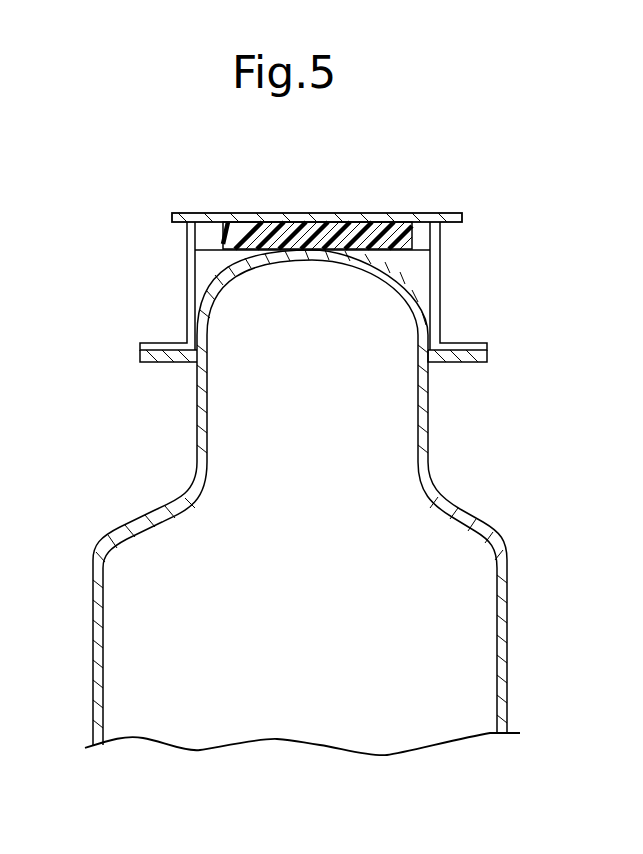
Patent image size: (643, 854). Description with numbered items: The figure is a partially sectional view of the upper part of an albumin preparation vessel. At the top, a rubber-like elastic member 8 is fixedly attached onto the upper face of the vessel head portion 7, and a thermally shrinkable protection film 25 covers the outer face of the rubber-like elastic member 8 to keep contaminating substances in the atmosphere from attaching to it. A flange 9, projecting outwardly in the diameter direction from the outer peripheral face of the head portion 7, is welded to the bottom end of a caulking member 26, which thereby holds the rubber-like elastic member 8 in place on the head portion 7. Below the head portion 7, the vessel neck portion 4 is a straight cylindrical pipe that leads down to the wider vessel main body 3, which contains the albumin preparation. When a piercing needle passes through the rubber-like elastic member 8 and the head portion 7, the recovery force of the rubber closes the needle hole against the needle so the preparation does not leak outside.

The thermally shrinkable protection film 25 is at (262, 213).
The rubber-like elastic member 8 is at (385, 213).
The caulking member 26 is at (433, 292).
The flange 9 is at (487, 363).
The vessel head portion 7 is at (293, 253).
The vessel neck portion 4 is at (321, 433).
The vessel main body 3 is at (348, 676).